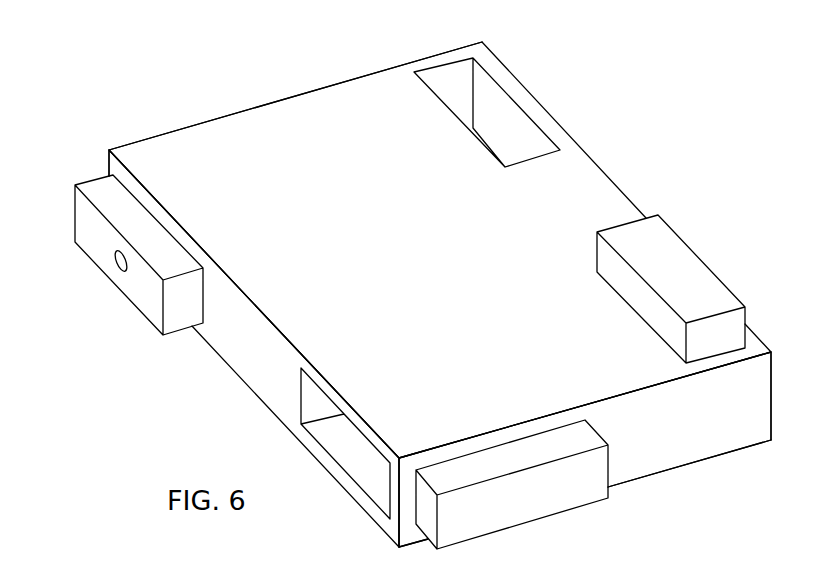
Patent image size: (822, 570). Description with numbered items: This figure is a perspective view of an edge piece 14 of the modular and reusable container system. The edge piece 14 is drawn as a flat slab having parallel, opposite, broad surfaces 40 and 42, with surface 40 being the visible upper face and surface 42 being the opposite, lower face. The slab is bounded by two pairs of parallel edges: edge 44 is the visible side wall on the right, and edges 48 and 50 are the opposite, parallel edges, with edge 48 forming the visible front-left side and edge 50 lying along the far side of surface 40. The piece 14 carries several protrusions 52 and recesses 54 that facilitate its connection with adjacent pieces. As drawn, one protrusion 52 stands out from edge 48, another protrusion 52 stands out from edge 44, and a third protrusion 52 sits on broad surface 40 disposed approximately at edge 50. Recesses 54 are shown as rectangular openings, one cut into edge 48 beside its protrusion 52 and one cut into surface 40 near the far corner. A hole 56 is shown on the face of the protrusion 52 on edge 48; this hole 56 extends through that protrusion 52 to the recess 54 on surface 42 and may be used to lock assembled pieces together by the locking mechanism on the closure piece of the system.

The edge piece 14 is at (406, 297).
The broad surface 40 is at (264, 124).
The broad surface 42 is at (688, 465).
The edge 44 is at (730, 432).
The edge 48 is at (243, 352).
The edge 50 is at (575, 175).
The protrusions 52 is at (97, 182).
The recesses 54 is at (503, 108).
The hole 56 is at (110, 270).